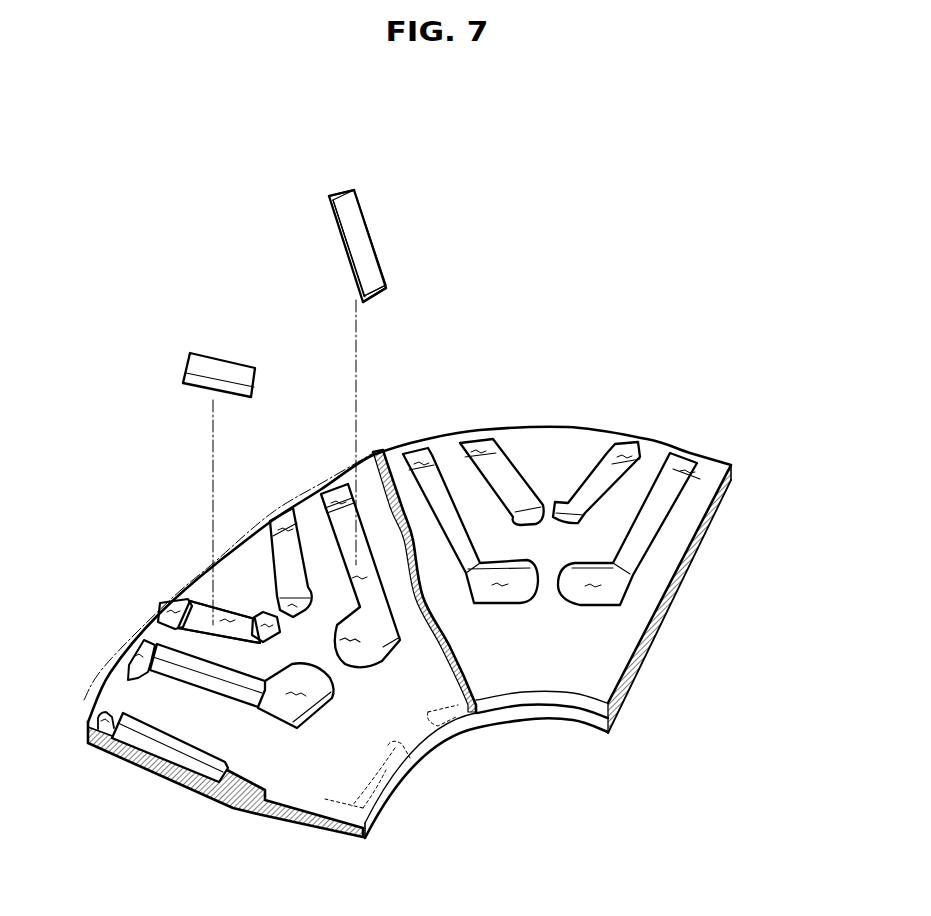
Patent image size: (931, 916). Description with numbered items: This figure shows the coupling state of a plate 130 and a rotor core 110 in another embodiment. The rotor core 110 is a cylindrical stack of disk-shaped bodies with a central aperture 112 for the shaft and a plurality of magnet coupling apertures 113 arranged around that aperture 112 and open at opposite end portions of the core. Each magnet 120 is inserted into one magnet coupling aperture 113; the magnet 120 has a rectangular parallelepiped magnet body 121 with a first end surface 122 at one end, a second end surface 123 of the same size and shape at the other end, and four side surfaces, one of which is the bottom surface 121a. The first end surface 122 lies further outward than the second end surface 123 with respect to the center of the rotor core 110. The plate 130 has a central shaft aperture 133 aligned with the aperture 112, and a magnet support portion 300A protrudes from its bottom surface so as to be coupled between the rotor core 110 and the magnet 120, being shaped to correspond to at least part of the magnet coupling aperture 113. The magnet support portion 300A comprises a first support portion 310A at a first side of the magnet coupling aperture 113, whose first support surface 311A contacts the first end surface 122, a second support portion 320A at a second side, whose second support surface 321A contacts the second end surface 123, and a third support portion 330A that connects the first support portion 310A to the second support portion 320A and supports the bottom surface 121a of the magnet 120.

The rotor core 110 is at (554, 603).
The aperture 112 is at (578, 702).
The magnet coupling aperture 113 is at (477, 443).
The magnet 120 is at (337, 242).
The magnet body 121 is at (363, 240).
The bottom surface 121a is at (346, 262).
The first end surface 122 is at (353, 190).
The second end surface 123 is at (380, 299).
The plate 130 is at (735, 481).
The shaft aperture 133 is at (463, 734).
The magnet support portion 300A is at (298, 618).
The first support portion 310A is at (166, 601).
The first support surface 311A is at (203, 605).
The second support portion 320A is at (280, 629).
The second support surface 321A is at (242, 628).
The third support portion 330A is at (331, 590).